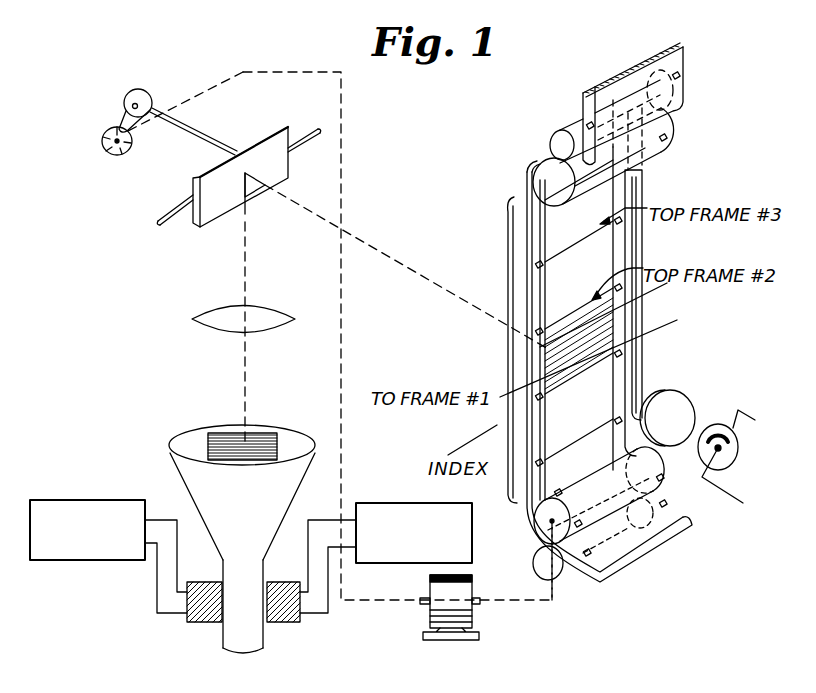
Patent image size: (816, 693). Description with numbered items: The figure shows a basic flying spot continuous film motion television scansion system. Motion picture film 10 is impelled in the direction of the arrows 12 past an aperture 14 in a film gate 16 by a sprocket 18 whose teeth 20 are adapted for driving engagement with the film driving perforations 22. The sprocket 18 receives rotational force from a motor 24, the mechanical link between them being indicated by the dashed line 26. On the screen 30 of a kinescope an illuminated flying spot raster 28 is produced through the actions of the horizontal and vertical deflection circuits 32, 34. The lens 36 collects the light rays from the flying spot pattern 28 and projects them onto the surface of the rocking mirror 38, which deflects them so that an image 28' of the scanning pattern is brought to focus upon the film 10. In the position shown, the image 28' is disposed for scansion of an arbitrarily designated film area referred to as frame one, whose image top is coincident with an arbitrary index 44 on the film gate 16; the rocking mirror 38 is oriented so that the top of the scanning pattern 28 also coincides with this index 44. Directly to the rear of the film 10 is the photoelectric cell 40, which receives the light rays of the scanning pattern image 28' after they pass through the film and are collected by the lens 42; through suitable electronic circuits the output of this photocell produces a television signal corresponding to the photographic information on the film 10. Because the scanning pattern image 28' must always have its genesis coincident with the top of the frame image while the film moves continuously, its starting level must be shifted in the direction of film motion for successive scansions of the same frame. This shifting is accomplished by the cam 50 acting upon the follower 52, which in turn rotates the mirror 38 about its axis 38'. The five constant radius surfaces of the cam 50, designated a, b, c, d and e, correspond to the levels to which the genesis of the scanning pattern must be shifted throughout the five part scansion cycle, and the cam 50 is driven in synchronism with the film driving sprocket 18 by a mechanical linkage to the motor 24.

The motion picture film 10 is at (598, 91).
The arrows 12 is at (520, 178).
The aperture 14 is at (530, 278).
The film gate 16 is at (507, 243).
The sprocket 18 is at (182, 462).
The teeth 20 is at (566, 504).
The film driving perforations 22 is at (620, 353).
The motor 24 is at (430, 592).
The dashed line 26 is at (548, 604).
The flying spot raster 28 is at (226, 430).
The scanning pattern image 28' is at (588, 340).
The screen 30 is at (293, 445).
The horizontal deflection circuit 32 is at (97, 500).
The vertical deflection circuit 34 is at (396, 503).
The lens 36 is at (223, 308).
The rocking mirror 38 is at (240, 167).
The axis 38' is at (242, 159).
The photoelectric cell 40 is at (740, 448).
The lens 42 is at (690, 402).
The index level 44 is at (460, 440).
The cam 50 is at (118, 157).
The follower 52 is at (146, 92).